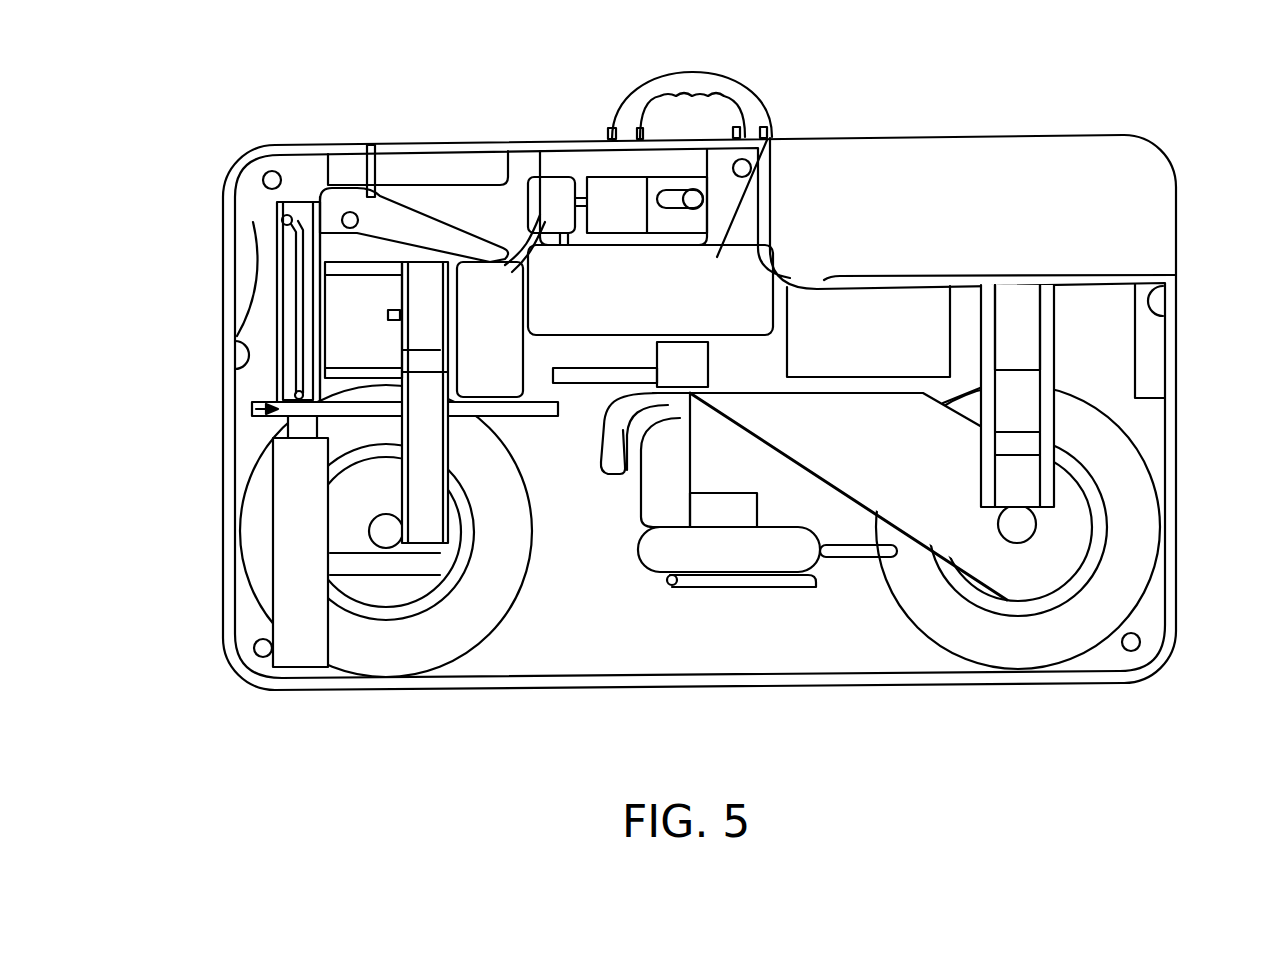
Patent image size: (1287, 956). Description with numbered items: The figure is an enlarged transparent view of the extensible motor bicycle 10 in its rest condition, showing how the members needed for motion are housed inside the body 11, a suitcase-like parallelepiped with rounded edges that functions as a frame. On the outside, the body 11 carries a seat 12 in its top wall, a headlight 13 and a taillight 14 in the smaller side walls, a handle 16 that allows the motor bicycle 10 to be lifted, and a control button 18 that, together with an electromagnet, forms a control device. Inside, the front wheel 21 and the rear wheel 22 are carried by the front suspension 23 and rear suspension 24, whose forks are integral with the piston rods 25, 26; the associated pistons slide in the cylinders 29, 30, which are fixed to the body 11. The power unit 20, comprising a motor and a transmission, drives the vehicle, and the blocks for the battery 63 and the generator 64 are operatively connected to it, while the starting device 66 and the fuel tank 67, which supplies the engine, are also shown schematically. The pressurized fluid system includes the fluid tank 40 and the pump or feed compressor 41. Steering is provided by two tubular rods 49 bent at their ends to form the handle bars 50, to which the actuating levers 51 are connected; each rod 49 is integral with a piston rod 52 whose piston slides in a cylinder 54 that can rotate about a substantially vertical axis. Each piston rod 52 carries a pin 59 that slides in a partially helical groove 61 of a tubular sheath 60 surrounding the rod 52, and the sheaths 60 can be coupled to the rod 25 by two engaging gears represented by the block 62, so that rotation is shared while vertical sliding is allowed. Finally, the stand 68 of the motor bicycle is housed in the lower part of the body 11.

The extensible motor bicycle 10 is at (463, 138).
The body 11 is at (228, 462).
The seat 12 is at (1065, 215).
The headlight 13 is at (250, 245).
The taillight 14 is at (1158, 375).
The handle 16 is at (745, 118).
The control button 18 is at (693, 200).
The power unit 20 is at (668, 483).
The front wheel 21 is at (368, 648).
The rear wheel 22 is at (1032, 640).
The front suspension 23 is at (423, 508).
The rear suspension 24 is at (1012, 482).
The piston rod 25 is at (430, 443).
The piston rod 26 is at (1022, 444).
The cylinder 29 is at (417, 320).
The cylinder 30 is at (1015, 340).
The fluid tank 40 is at (503, 307).
The pump or feed compressor 41 is at (565, 195).
The tubular rods 49 is at (292, 283).
The handle bars 50 is at (497, 163).
The actuating levers 51 is at (457, 243).
The piston rod 52 is at (290, 430).
The cylinder 54 is at (287, 563).
The pin 59 is at (296, 393).
The tubular sheath 60 is at (283, 325).
The partially helical groove 61 is at (295, 240).
The gear block 62 is at (253, 410).
The battery 63 is at (855, 330).
The generator 64 is at (705, 372).
The starting device 66 is at (730, 512).
The fuel tank 67 is at (717, 257).
The stand 68 is at (732, 580).